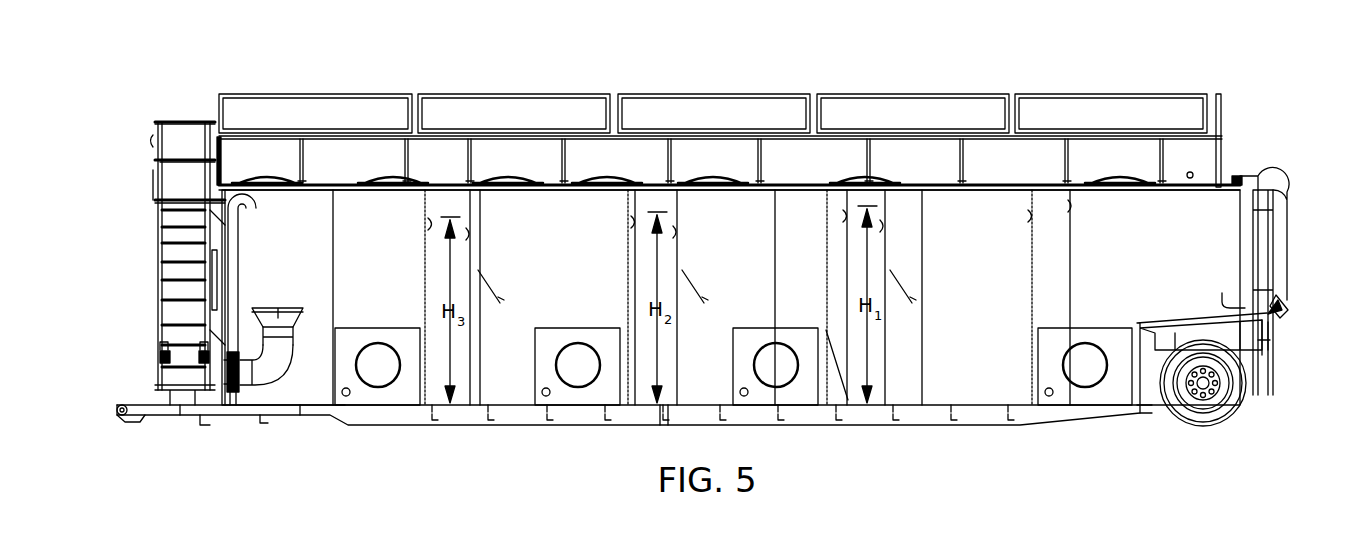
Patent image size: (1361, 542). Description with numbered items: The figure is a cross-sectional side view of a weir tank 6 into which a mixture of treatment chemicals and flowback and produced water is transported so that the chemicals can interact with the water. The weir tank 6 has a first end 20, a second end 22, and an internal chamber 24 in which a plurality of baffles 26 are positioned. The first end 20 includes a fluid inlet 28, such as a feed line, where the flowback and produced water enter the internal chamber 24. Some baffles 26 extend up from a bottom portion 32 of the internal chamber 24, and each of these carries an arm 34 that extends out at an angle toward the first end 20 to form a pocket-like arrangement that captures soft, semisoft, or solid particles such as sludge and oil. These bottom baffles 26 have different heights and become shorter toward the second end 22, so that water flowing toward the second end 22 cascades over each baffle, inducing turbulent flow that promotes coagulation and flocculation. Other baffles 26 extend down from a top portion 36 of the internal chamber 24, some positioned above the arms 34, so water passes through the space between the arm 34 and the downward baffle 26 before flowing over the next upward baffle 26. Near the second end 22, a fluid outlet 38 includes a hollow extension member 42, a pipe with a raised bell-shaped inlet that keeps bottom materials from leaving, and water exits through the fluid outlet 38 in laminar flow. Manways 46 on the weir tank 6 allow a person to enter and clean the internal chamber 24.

The weir tank 6 is at (203, 75).
The first end 20 is at (1266, 322).
The second end 22 is at (160, 300).
The internal chamber 24 is at (571, 262).
The baffles 26 is at (886, 265).
The fluid inlet 28 is at (1287, 228).
The bottom portion 32 is at (700, 392).
The arm 34 is at (912, 300).
The top portion 36 is at (796, 201).
The fluid outlet 38 is at (222, 378).
The hollow extension member 42 is at (280, 358).
The manways 46 is at (506, 183).